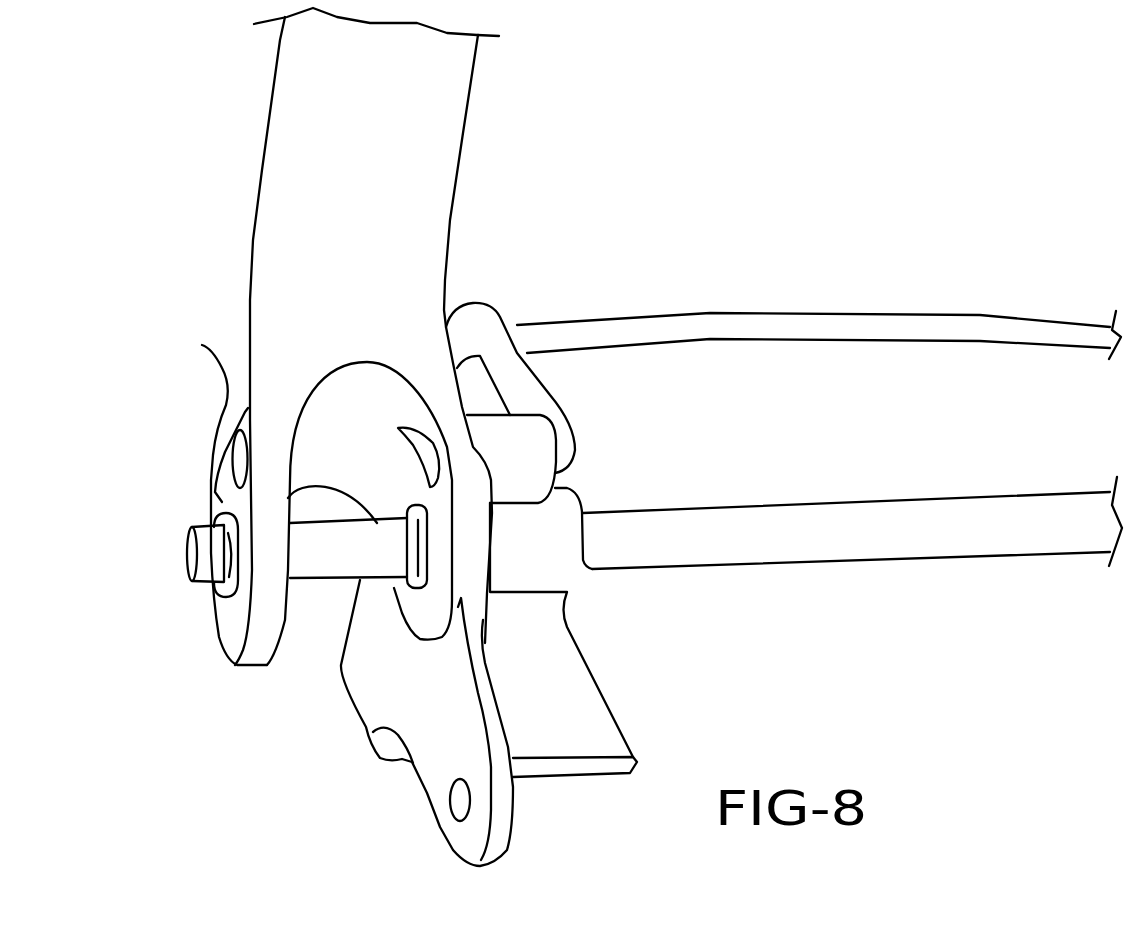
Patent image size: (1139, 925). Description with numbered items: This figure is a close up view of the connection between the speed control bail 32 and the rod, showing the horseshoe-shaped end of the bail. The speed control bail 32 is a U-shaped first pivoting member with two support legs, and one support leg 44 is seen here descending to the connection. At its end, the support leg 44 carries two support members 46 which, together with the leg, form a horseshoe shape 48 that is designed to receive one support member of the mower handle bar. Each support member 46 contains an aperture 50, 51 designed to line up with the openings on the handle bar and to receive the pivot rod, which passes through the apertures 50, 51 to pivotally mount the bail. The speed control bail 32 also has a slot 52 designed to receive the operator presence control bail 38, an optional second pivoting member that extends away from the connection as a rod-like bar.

The speed control bail 32 is at (236, 89).
The operator presence control bail 38 is at (483, 323).
The support leg 44 is at (268, 210).
The support member 46 is at (465, 495).
The horseshoe shape 48 is at (189, 493).
The aperture 50 is at (218, 580).
The aperture 51 is at (413, 577).
The slot 52 is at (525, 447).